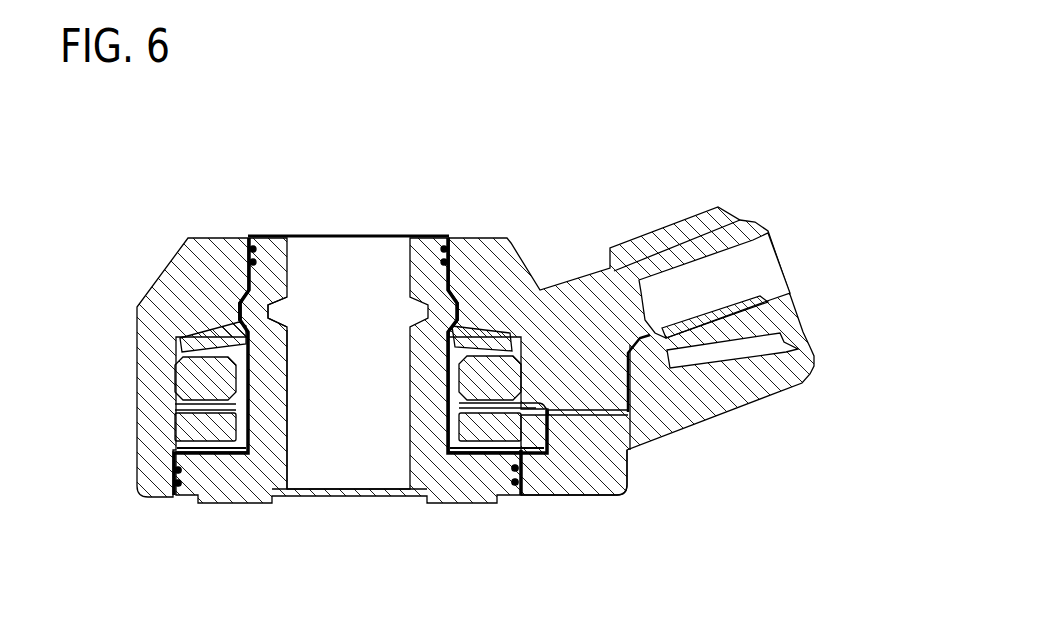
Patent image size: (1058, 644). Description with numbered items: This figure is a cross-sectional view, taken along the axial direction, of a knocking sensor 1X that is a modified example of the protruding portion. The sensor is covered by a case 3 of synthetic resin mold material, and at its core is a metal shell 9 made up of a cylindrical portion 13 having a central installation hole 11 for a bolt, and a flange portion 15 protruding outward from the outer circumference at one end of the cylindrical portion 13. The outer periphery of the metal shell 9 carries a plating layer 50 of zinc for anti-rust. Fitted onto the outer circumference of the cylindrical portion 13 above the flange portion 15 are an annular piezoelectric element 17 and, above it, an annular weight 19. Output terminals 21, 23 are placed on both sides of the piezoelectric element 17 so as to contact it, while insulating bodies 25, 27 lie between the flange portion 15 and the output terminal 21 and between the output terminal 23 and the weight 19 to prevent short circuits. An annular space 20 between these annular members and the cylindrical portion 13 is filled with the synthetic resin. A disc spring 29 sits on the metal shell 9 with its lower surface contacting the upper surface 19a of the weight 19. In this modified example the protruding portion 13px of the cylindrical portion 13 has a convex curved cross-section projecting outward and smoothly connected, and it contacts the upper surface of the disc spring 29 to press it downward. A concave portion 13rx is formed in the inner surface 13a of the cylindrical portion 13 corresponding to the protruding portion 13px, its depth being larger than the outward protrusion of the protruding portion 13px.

The knocking sensor 1X is at (408, 164).
The case 3 is at (522, 246).
The metal shell 9 is at (480, 561).
The installation hole 11 is at (348, 258).
The cylindrical portion 13 is at (410, 440).
The protruding portion 13px is at (240, 312).
The concave portion 13rx is at (288, 308).
The inner surface 13a is at (290, 405).
The flange portion 15 is at (465, 480).
The piezoelectric element 17 is at (515, 392).
The weight 19 is at (630, 462).
The upper surface 19a is at (188, 342).
The annular space 20 is at (255, 456).
The output terminal 21 is at (540, 414).
The output terminal 23 is at (540, 432).
The insulating body 25 is at (517, 486).
The insulating body 27 is at (614, 495).
The disc spring 29 is at (500, 325).
The plating layer 50 is at (253, 242).